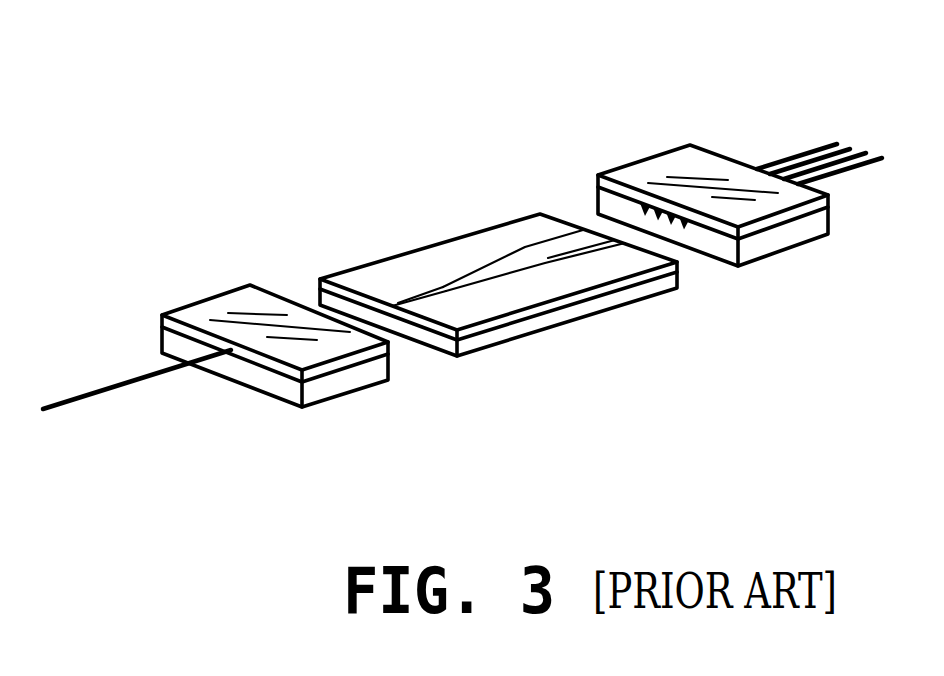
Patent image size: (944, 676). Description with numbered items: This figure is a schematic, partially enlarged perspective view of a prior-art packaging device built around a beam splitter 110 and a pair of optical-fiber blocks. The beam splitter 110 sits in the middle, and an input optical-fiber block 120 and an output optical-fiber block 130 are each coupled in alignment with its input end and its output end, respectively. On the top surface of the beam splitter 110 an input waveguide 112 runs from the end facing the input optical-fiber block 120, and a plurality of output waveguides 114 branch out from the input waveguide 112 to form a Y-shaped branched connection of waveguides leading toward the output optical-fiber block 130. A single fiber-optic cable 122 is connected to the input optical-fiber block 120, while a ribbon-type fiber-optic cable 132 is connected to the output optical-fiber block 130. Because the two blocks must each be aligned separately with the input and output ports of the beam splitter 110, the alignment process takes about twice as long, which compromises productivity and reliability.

The beam splitter 110 is at (479, 196).
The input waveguide 112 is at (392, 304).
The output waveguides 114 is at (540, 238).
The input optical-fiber block 120 is at (257, 322).
The single fiber-optic cable 122 is at (100, 387).
The output optical-fiber block 130 is at (680, 167).
The ribbon-type fiber-optic cable 132 is at (793, 157).